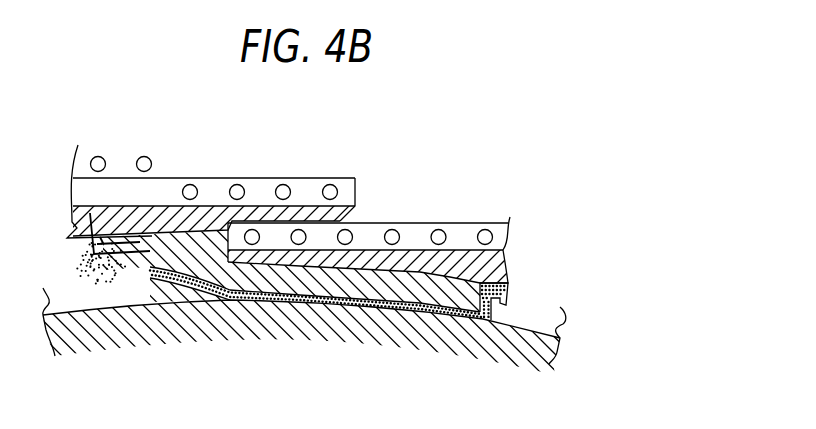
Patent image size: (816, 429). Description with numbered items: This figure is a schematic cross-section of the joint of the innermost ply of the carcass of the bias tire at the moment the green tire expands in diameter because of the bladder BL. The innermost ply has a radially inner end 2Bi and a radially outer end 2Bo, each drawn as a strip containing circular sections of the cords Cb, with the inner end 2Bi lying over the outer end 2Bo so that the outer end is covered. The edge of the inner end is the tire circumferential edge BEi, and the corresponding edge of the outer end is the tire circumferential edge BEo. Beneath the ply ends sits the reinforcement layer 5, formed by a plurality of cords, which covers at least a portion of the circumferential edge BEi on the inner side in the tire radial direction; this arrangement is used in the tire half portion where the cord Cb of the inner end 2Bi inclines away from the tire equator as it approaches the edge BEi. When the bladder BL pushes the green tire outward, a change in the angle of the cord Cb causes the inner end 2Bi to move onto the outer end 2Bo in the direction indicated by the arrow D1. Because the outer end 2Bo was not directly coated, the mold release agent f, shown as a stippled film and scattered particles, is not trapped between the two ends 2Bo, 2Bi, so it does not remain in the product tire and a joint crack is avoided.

The end on the outer side in the tire radial direction 2Bo is at (168, 192).
The end on the inner side in the tire radial direction 2Bi is at (445, 368).
The cord Cb is at (360, 368).
The tire circumferential edge on the outer side BEo is at (383, 178).
The tire circumferential edge on the inner side BEi is at (188, 365).
The direction D1 is at (470, 212).
The reinforcement layer 5 is at (233, 357).
The bladder BL is at (303, 380).
The mold release agent f is at (119, 332).